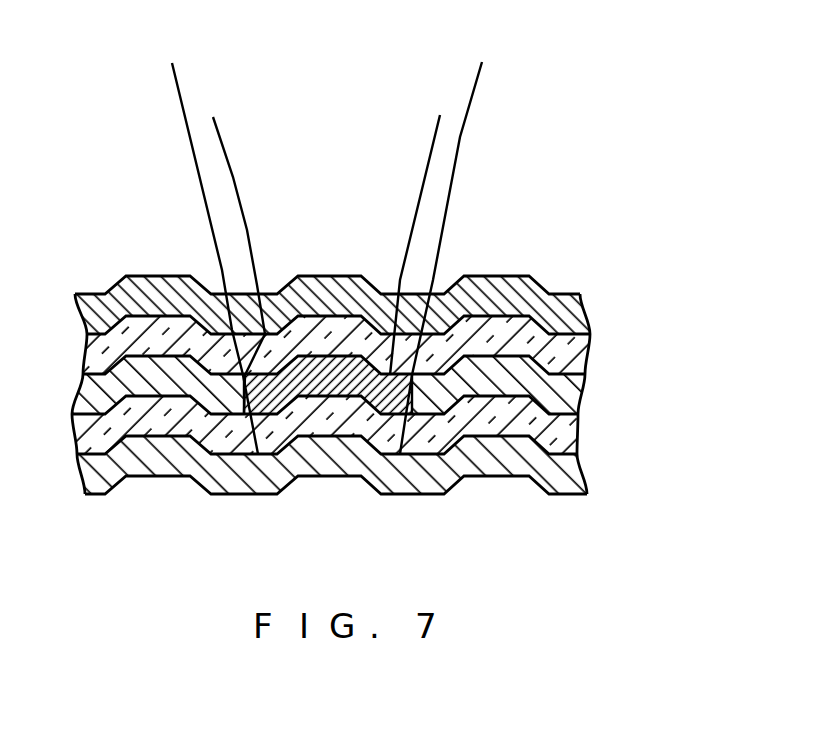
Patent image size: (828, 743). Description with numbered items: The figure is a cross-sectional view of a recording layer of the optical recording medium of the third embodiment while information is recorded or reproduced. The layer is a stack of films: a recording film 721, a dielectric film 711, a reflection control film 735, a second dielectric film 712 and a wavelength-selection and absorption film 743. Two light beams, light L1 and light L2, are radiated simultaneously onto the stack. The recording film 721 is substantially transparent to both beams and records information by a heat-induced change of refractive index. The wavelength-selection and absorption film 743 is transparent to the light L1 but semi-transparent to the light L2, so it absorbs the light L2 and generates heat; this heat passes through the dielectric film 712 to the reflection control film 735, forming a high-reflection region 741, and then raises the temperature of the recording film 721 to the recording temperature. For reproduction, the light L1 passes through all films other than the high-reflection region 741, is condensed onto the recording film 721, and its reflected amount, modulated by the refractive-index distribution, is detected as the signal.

The recording film 721 is at (582, 298).
The dielectric film 711 is at (588, 341).
The reflection control film 735 is at (584, 386).
The dielectric film 712 is at (580, 426).
The wavelength-selection and absorption film 743 is at (580, 469).
The high-reflection region 741 is at (327, 388).
The light L1 is at (402, 195).
The light L2 is at (452, 137).